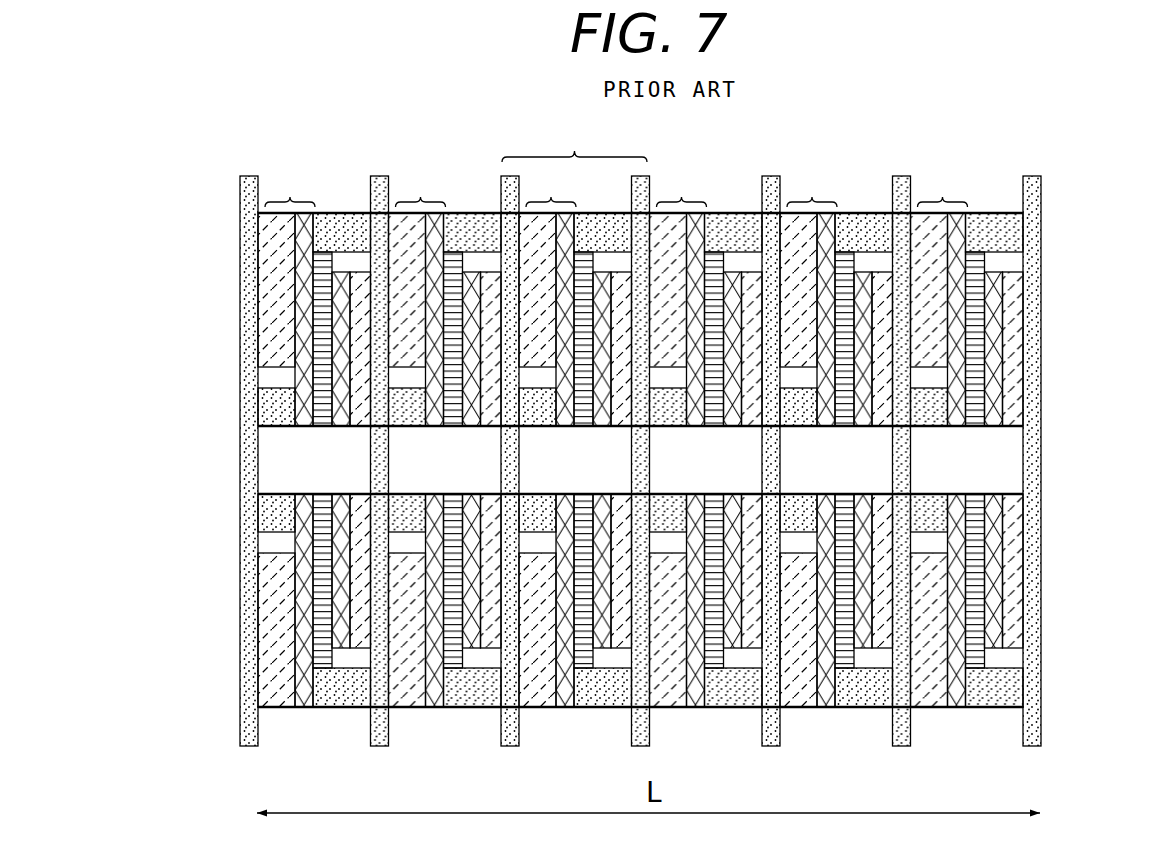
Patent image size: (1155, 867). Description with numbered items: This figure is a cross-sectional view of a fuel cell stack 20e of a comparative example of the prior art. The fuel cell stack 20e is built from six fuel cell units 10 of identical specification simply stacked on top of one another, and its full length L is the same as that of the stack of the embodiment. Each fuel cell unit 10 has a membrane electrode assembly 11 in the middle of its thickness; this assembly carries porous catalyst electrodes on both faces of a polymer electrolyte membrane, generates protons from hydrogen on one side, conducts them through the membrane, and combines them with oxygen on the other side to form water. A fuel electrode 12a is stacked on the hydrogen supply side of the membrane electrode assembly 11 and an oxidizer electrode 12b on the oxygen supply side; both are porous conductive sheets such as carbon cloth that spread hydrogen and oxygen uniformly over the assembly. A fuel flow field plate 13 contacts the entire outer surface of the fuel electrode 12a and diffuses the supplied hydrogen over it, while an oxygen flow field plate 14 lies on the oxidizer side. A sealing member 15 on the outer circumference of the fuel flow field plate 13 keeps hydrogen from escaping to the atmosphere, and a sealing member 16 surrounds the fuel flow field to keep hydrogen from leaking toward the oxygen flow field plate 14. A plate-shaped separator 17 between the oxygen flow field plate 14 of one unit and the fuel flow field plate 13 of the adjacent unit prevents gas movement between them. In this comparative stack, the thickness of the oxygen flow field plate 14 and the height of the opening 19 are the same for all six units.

The fuel cell unit 10 is at (574, 142).
The membrane electrode assembly 11 is at (977, 393).
The fuel electrode 12a is at (995, 588).
The oxidizer electrode 12b is at (300, 601).
The fuel flow field plate 13 is at (1010, 293).
The oxygen flow field plate 14 is at (276, 291).
The sealing member 15 is at (1005, 232).
The sealing member 16 is at (276, 408).
The separator 17 is at (1043, 720).
The opening 19 is at (616, 187).
The fuel cell stack 20e is at (850, 118).